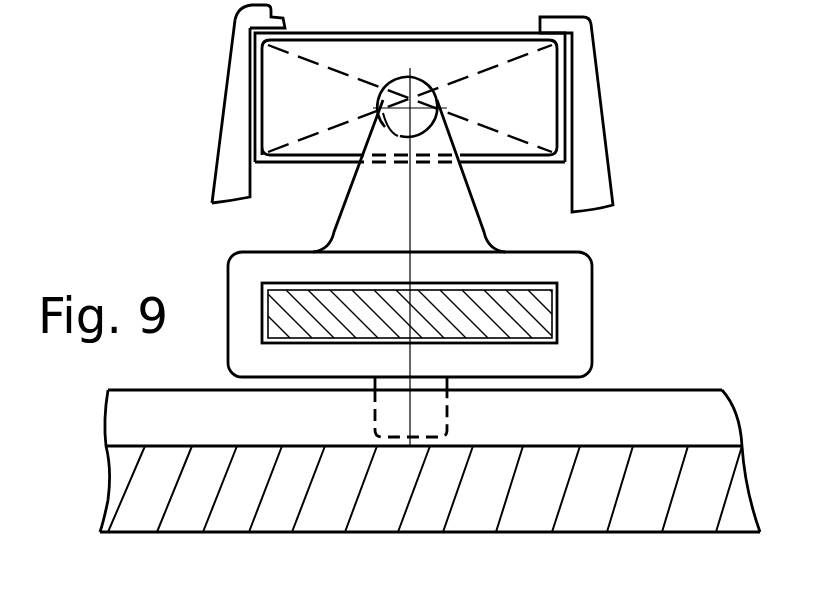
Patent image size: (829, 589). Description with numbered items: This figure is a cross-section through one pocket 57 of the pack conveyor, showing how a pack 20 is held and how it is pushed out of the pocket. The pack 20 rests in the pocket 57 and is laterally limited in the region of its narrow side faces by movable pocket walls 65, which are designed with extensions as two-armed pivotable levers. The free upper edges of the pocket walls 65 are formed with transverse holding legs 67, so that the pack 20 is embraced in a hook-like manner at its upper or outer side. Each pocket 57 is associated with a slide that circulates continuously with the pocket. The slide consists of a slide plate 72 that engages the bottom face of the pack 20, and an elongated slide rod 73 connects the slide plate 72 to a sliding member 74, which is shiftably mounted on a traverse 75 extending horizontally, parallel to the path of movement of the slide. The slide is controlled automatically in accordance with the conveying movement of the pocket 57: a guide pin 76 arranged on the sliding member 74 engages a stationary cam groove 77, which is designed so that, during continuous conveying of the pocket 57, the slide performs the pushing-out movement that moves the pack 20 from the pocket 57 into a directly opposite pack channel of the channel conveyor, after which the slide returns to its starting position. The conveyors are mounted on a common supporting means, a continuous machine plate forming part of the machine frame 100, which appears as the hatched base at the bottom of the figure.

The pack 20 is at (497, 33).
The pocket 57 is at (665, 109).
The pocket wall 65 is at (225, 145).
The holding leg 67 is at (246, 12).
The slide plate 72 is at (533, 87).
The slide rod 73 is at (392, 120).
The sliding member 74 is at (582, 273).
The traverse 75 is at (530, 323).
The guide pin 76 is at (447, 412).
The cam groove 77 is at (698, 417).
The machine frame 100 is at (713, 513).